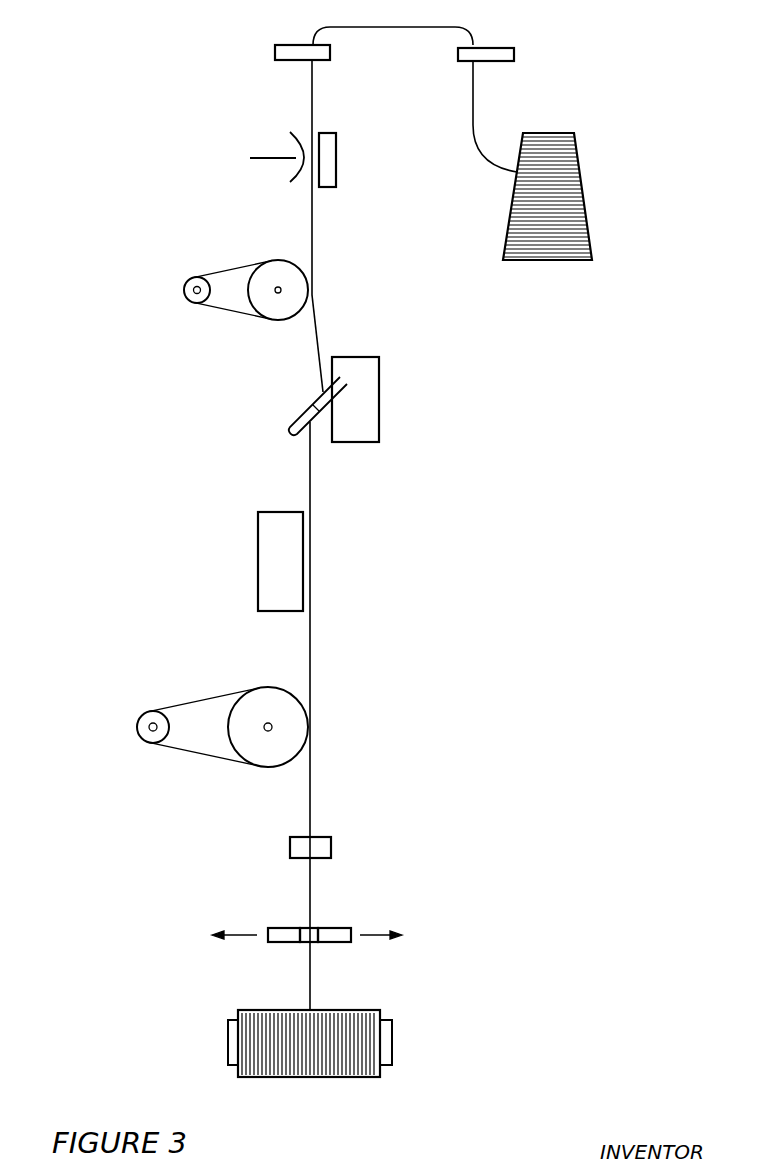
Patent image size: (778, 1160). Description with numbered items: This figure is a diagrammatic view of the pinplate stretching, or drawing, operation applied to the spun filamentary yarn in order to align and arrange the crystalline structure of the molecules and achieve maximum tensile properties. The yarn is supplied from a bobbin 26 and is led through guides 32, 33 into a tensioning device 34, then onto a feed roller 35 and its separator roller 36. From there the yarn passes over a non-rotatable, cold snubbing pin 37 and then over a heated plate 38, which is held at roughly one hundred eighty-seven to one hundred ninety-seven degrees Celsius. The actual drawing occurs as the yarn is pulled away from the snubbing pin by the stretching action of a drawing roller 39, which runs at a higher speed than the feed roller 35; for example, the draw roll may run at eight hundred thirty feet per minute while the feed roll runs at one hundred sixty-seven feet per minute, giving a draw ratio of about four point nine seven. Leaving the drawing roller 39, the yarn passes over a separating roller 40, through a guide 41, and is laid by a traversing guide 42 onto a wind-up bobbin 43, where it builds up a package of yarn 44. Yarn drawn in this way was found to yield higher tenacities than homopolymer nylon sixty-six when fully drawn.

The bobbin 26 is at (578, 150).
The guide 32 is at (512, 48).
The guide 33 is at (275, 46).
The tensioning device 34 is at (336, 170).
The feed roller 35 is at (283, 258).
The separator roller 36 is at (184, 296).
The non-rotatable snubbing pin 37 is at (291, 427).
The heated plate 38 is at (258, 525).
The drawing roller 39 is at (274, 686).
The separating roller 40 is at (137, 734).
The guide 41 is at (331, 838).
The traversing guide 42 is at (351, 928).
The wind-up bobbin 43 is at (393, 1053).
The package of yarn 44 is at (413, 1012).